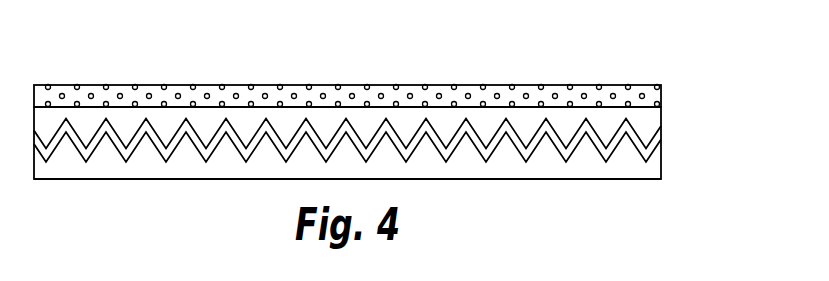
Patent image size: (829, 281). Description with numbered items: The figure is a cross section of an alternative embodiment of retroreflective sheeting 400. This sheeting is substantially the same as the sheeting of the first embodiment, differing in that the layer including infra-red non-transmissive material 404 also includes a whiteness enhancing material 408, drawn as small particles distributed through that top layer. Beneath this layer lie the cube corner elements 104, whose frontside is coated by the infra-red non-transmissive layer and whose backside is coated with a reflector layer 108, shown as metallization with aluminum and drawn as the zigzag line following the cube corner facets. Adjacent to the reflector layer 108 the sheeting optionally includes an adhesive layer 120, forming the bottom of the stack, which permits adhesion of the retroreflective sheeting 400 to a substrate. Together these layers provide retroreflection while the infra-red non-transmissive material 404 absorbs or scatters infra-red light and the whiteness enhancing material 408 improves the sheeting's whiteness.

The retroreflective sheeting 400 is at (126, 40).
The infra-red non-transmissive material layer 404 is at (662, 90).
The whiteness enhancing material 408 is at (615, 85).
The cube corner elements 104 is at (650, 118).
The reflector layer 108 is at (658, 138).
The adhesive layer 120 is at (652, 170).